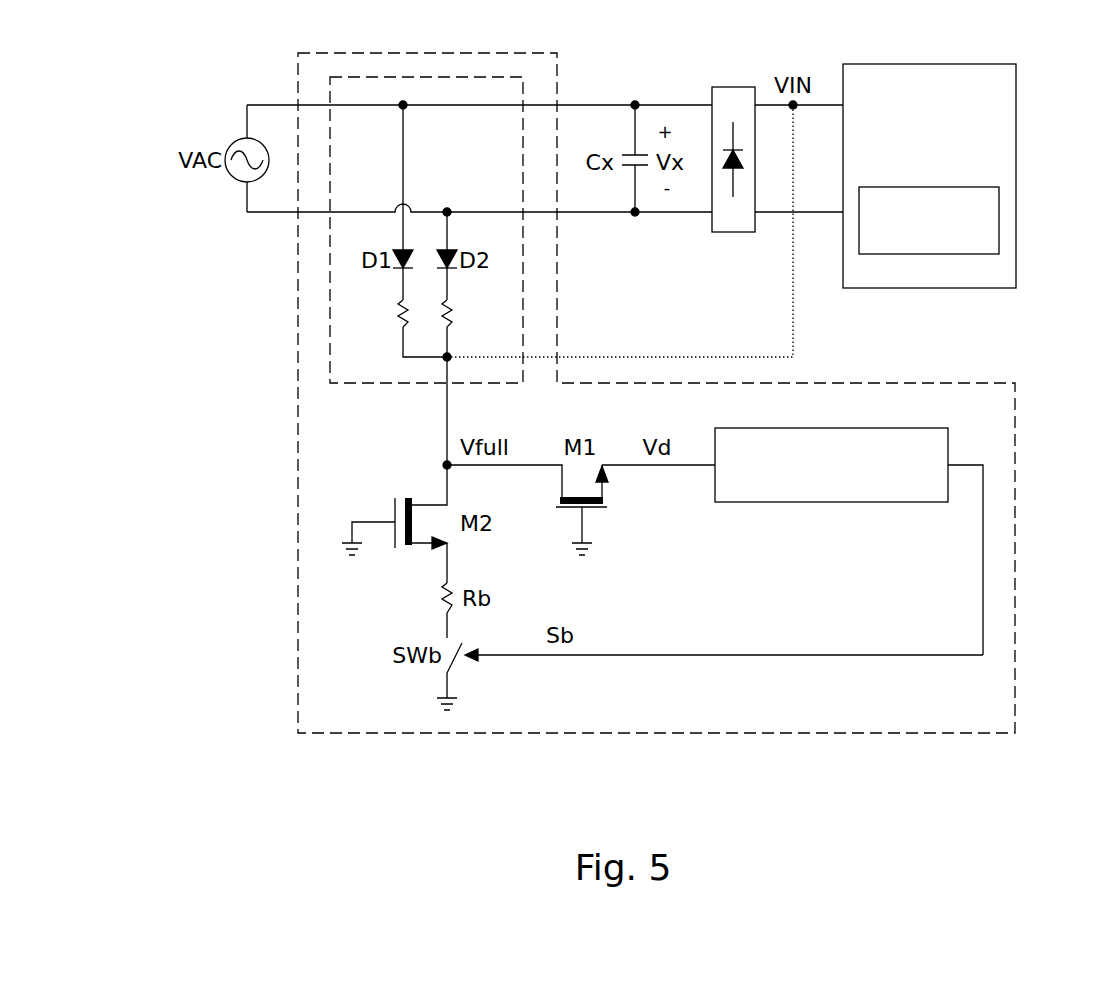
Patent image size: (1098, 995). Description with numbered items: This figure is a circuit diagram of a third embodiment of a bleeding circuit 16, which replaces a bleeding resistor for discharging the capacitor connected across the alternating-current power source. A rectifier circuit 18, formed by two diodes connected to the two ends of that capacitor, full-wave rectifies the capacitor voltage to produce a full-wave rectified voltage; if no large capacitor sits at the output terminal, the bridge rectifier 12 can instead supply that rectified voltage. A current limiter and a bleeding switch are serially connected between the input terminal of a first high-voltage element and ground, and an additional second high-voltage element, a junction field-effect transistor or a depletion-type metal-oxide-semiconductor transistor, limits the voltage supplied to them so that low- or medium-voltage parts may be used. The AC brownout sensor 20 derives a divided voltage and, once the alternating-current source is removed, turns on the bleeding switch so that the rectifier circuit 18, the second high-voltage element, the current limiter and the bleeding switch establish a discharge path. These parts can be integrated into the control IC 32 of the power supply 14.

The bridge rectifier 12 is at (733, 233).
The power supply 14 is at (1016, 155).
The bleeding circuit 16 is at (298, 383).
The rectifier circuit 18 is at (378, 385).
The AC brownout sensor 20 is at (807, 503).
The control IC 32 is at (999, 222).